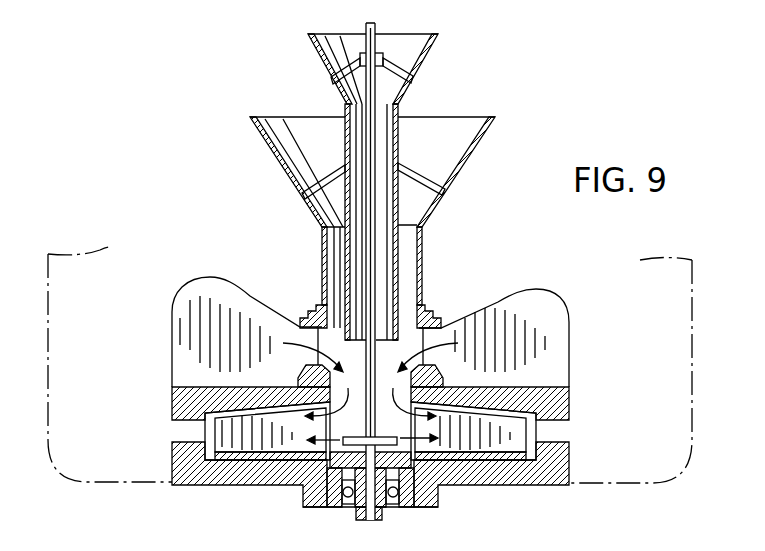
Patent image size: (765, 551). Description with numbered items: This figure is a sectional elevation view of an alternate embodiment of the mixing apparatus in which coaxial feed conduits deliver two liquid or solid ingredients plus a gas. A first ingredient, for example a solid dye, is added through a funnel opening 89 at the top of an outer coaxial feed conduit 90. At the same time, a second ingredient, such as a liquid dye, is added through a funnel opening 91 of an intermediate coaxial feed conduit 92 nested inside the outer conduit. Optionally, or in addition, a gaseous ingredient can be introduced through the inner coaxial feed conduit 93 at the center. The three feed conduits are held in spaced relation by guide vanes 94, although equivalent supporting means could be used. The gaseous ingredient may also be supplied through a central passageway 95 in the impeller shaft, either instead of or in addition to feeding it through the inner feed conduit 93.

The funnel opening 89 is at (475, 143).
The outer coaxial feed conduit 90 is at (322, 272).
The funnel opening 91 is at (428, 54).
The intermediate coaxial feed conduit 92 is at (393, 158).
The inner coaxial feed conduit 93 is at (378, 27).
The guide vanes 94 is at (200, 288).
The central passageway 95 is at (395, 497).